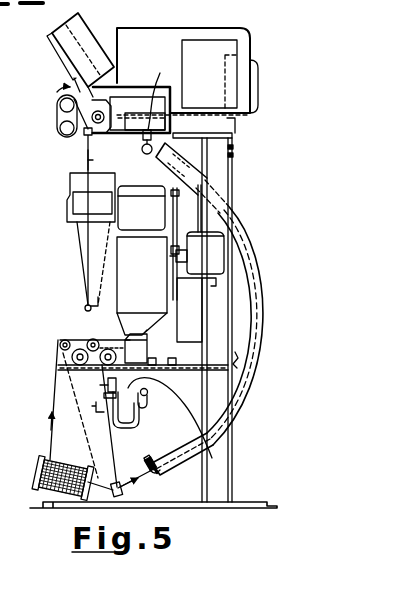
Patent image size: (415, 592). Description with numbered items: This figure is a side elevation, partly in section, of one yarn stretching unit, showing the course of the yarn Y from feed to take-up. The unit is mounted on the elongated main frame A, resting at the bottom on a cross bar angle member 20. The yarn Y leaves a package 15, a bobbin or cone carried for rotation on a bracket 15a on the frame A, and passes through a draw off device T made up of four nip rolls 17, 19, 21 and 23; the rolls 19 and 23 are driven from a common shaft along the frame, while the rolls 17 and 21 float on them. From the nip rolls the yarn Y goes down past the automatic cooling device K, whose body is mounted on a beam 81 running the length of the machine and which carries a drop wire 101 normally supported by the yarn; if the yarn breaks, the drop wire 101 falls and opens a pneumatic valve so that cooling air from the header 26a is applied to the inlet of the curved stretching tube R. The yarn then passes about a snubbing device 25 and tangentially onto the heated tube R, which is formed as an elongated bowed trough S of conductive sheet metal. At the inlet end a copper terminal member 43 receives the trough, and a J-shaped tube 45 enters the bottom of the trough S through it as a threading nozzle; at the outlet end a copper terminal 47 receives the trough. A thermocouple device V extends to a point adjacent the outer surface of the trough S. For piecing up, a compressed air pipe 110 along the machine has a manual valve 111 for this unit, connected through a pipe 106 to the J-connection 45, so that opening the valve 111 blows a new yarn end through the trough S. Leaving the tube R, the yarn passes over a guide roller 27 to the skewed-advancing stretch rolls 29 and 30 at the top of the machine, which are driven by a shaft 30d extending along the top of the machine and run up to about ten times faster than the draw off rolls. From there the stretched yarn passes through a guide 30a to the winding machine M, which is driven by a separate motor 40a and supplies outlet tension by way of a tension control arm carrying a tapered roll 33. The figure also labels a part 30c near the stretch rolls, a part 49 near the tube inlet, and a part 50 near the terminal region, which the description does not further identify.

The shaft 30d is at (67, 72).
The copper terminal 47 is at (157, 94).
The stretch roll 30 is at (59, 105).
The roller housing 30c is at (58, 110).
The stretch roll 29 is at (59, 130).
The guide 30a is at (88, 160).
The yarn Y is at (79, 159).
The guide roller 27 is at (140, 150).
The trough S is at (150, 152).
The chute tube 49 is at (178, 145).
The winding machine M is at (78, 182).
The motor 40a is at (215, 253).
The tapered roll 33 is at (85, 306).
The curved stretching tube R is at (262, 318).
The nip roll 17 is at (62, 345).
The draw off device T is at (78, 339).
The nip roll 21 is at (97, 340).
The nip roll 23 is at (135, 352).
The thermocouple device V is at (237, 353).
The nip roll 19 is at (58, 367).
The drop wire 101 is at (106, 385).
The automatic cooling device K is at (104, 396).
The beam 81 is at (152, 380).
The pipe 106 is at (188, 416).
The header 26a is at (147, 403).
The manual valve 111 is at (96, 413).
The compressed air pipe 110 is at (122, 421).
The package 15 is at (63, 470).
The nozzle 50 is at (152, 460).
The copper terminal member 43 is at (149, 462).
The snubbing device 25 is at (110, 490).
The J-shaped tube 45 is at (148, 477).
The cross bar angle member 20 is at (208, 461).
The main frame A is at (222, 487).
The bracket 15a is at (97, 497).